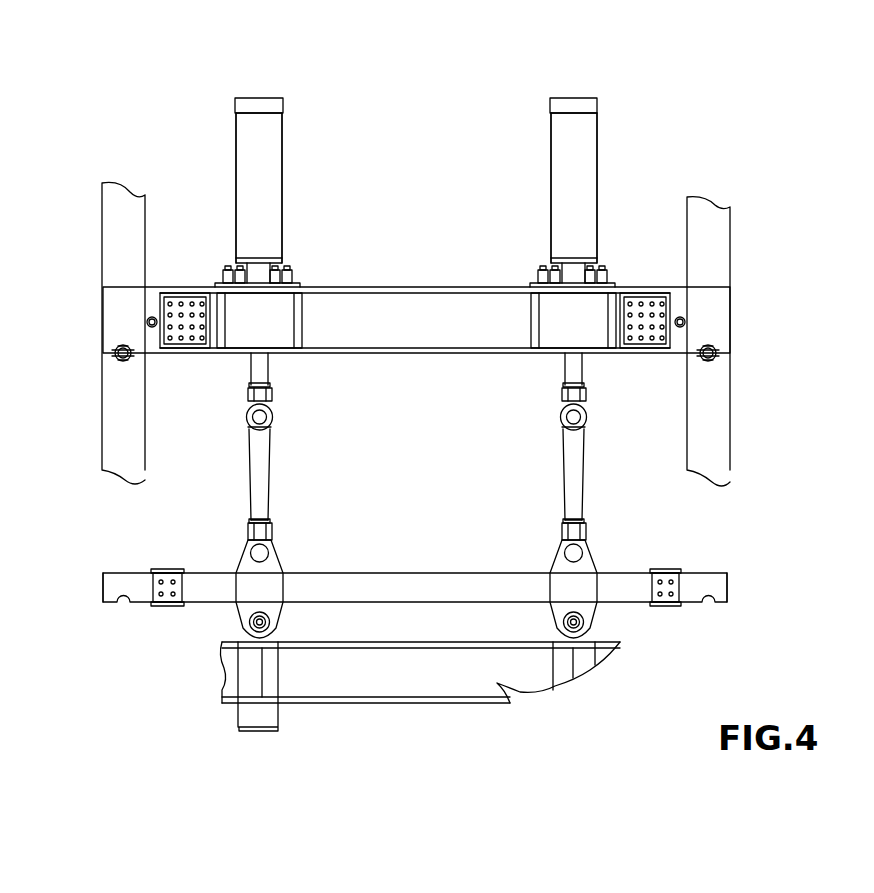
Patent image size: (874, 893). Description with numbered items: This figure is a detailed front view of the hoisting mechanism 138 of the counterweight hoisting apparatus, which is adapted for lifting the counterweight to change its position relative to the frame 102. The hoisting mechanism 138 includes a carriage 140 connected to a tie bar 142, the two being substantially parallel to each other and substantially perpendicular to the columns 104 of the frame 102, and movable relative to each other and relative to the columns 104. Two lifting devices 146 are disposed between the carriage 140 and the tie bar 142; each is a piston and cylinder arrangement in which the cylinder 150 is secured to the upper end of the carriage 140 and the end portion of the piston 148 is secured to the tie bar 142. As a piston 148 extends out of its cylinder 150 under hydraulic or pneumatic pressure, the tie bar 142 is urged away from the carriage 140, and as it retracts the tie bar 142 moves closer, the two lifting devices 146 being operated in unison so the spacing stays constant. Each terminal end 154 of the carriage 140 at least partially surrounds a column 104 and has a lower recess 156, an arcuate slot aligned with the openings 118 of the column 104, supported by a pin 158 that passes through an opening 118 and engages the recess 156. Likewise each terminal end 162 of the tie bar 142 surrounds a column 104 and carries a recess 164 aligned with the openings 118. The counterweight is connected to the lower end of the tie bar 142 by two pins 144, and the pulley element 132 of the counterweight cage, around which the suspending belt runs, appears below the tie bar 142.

The hoisting mechanism 138 is at (418, 58).
The frame 102 is at (139, 170).
The columns 104 is at (118, 218).
The lifting device 146 is at (262, 90).
The cylinder 150 is at (268, 196).
The carriage 140 is at (404, 284).
The terminal ends 154 is at (118, 308).
The recess 156 is at (118, 350).
The pin 158 is at (118, 358).
The openings 118 is at (128, 357).
The piston 148 is at (258, 375).
The pins 144 is at (258, 622).
The tie bar 142 is at (384, 588).
The terminal ends 162 is at (118, 582).
The recess 164 is at (120, 600).
The pulley element 132 is at (500, 683).